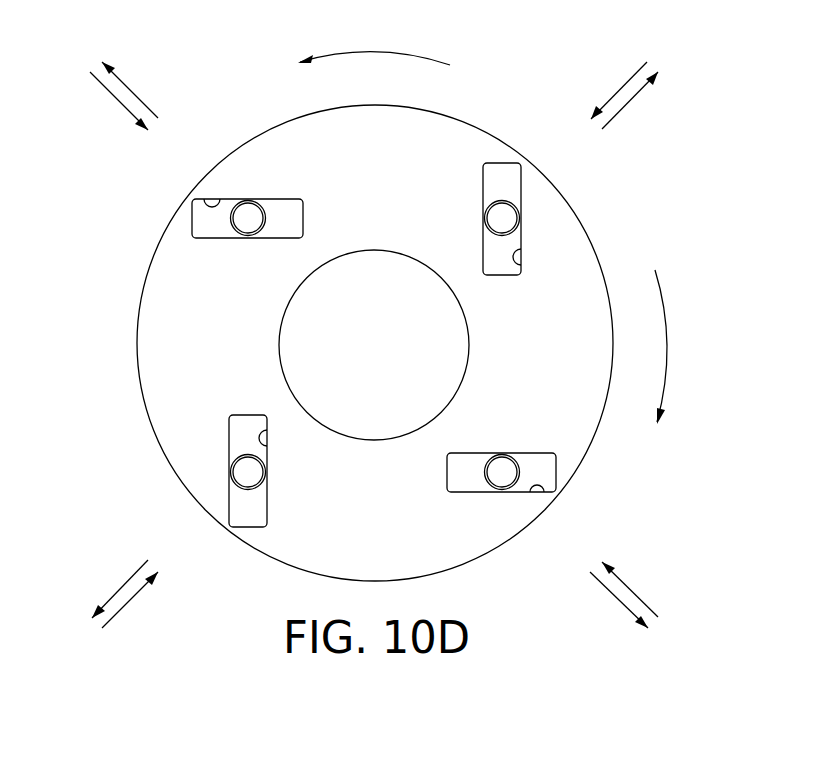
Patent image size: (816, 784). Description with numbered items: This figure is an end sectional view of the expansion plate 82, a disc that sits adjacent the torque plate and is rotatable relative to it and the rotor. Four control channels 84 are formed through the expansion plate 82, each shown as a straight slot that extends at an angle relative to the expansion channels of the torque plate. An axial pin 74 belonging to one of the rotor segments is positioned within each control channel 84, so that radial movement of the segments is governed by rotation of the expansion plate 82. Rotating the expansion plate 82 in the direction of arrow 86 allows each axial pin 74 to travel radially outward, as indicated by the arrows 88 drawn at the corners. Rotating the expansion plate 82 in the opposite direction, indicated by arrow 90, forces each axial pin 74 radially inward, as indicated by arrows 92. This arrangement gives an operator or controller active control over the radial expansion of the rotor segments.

The axial pin 74 is at (248, 218).
The expansion plate 82 is at (162, 350).
The control channel 84 is at (208, 198).
The arrow 86 is at (665, 346).
The arrows 88 is at (137, 94).
The arrow 90 is at (375, 54).
The arrows 92 is at (112, 95).